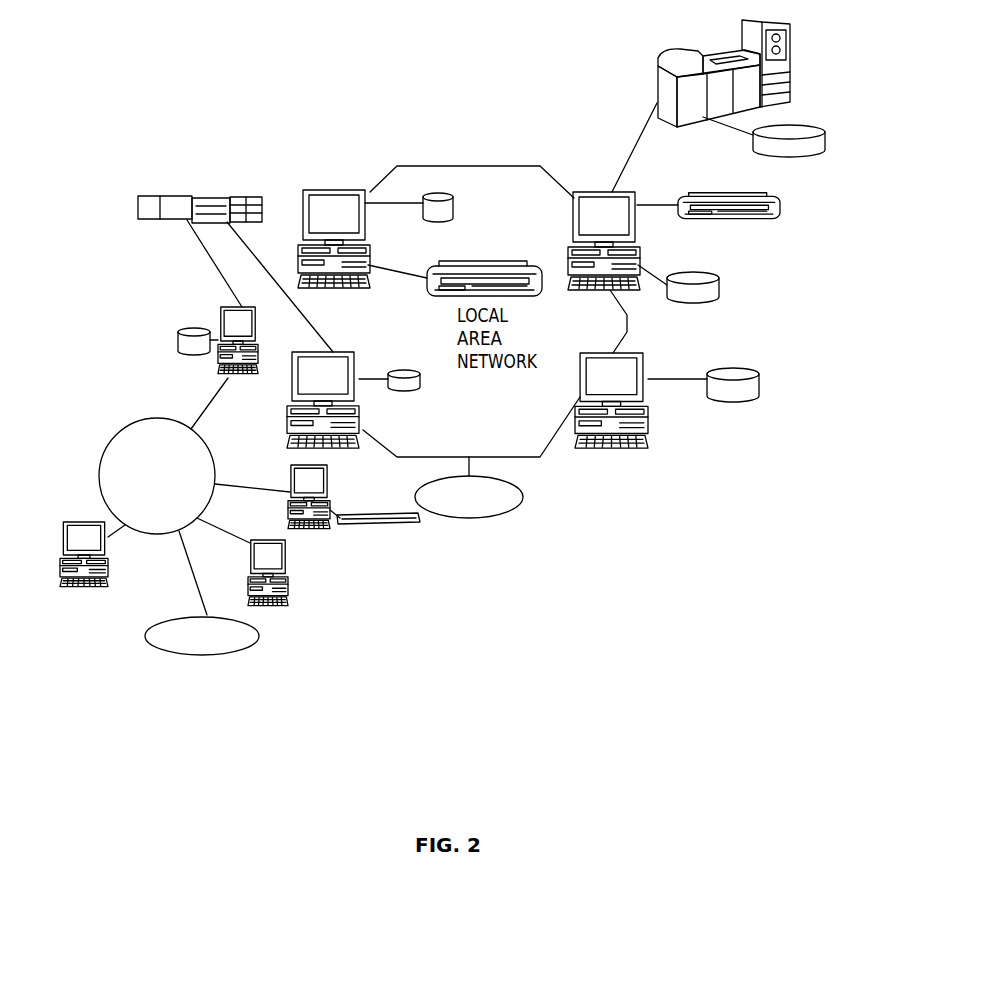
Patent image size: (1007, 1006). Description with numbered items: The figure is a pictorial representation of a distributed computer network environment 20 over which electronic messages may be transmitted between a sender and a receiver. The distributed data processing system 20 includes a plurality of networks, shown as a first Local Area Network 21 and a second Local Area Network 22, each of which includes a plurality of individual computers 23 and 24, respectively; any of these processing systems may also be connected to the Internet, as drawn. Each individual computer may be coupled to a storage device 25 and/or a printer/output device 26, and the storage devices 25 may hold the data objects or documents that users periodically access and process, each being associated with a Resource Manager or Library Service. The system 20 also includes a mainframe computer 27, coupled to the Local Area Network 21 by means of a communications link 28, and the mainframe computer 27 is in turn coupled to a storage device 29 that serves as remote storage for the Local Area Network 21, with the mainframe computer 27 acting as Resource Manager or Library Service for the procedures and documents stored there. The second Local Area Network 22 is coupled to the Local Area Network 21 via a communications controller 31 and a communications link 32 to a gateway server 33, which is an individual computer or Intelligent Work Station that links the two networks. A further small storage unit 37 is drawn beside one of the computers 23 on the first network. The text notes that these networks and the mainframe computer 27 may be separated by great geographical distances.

The distributed computer network environment 20 is at (380, 113).
The Local Area Network 21 is at (470, 166).
The second Local Area Network 22 is at (214, 449).
The individual computers 23 is at (325, 192).
The individual computers 24 is at (258, 326).
The storage device 25 is at (453, 197).
The printer/output device 26 is at (489, 262).
The mainframe computer 27 is at (724, 70).
The communications link 28 is at (256, 257).
The storage device 29 is at (783, 126).
The communications controller 31 is at (210, 190).
The communications link 32 is at (207, 250).
The gateway server 33 is at (540, 457).
The storage disk 37 is at (406, 368).